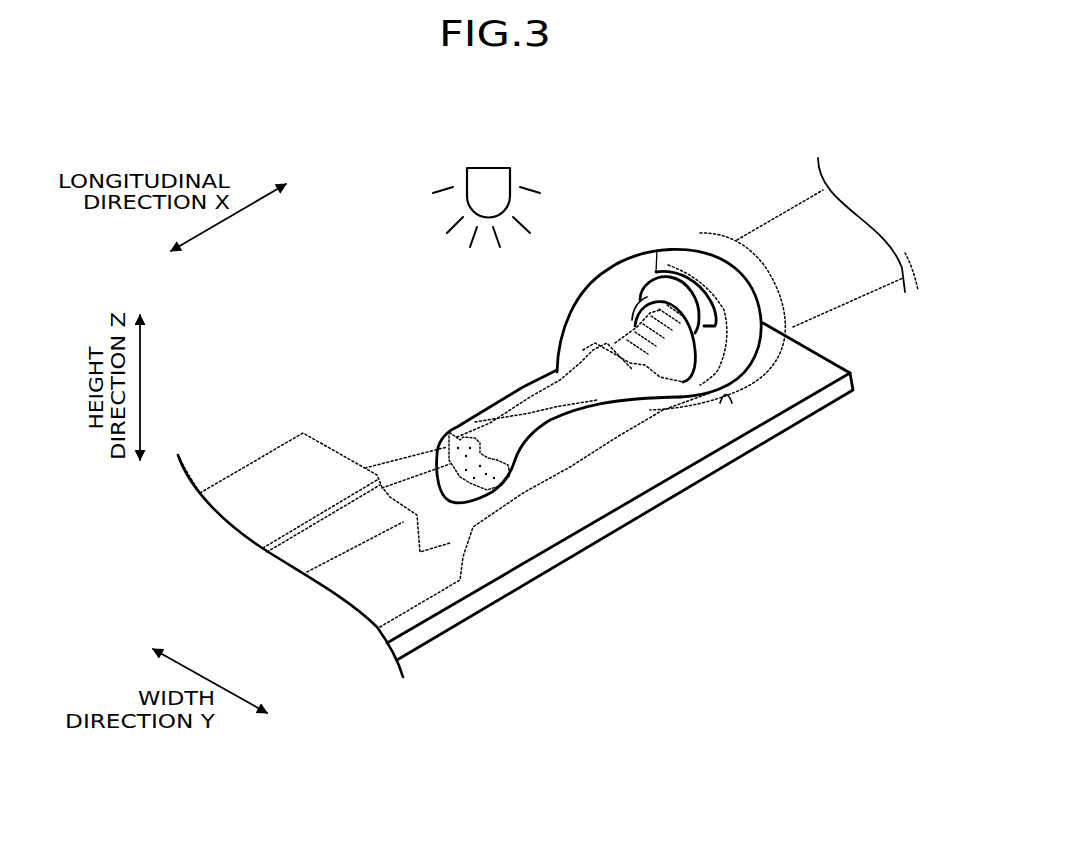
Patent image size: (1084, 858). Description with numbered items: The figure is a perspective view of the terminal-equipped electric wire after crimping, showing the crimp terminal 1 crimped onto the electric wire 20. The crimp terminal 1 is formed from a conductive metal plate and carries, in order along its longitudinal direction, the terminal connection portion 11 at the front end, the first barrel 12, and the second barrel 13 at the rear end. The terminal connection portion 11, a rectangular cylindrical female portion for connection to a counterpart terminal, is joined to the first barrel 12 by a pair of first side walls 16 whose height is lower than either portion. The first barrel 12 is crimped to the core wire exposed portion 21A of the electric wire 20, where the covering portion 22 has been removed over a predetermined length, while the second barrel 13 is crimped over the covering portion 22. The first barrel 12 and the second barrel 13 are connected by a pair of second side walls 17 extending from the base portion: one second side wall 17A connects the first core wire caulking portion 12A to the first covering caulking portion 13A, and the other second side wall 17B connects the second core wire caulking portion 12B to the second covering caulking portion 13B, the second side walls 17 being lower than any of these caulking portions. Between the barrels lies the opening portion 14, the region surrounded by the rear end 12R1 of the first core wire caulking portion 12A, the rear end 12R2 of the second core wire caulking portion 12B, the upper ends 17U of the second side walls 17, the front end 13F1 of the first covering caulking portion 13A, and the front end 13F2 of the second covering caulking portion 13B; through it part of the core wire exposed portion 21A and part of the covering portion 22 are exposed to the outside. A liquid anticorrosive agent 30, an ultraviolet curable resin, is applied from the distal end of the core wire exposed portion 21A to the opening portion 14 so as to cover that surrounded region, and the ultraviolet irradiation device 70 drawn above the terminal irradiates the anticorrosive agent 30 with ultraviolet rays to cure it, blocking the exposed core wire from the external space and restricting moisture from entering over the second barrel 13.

The crimp terminal 1 is at (338, 340).
The terminal connection portion 11 is at (227, 447).
The first barrel 12 is at (570, 366).
The first core wire caulking portion 12A is at (500, 405).
The second core wire caulking portion 12B is at (563, 445).
The rear end of the first core wire caulking portion 12R1 is at (605, 345).
The rear end of the second core wire caulking portion 12R2 is at (653, 367).
The second barrel 13 is at (698, 231).
The first covering caulking portion 13A is at (657, 272).
The second covering caulking portion 13B is at (805, 350).
The front end of the first covering caulking portion 13F1 is at (641, 296).
The front end of the second covering caulking portion 13F2 is at (725, 380).
The opening portion 14 is at (690, 400).
The first side walls 16 is at (407, 457).
The second side walls 17 is at (733, 383).
The one second side wall 17A is at (625, 345).
The other second side wall 17B is at (740, 381).
The upper ends of the second side walls 17U is at (730, 388).
The electric wire 20 is at (779, 199).
The core wire exposed portion 21A is at (610, 345).
The covering portion 22 is at (838, 287).
The anticorrosive agent 30 is at (640, 306).
The ultraviolet irradiation device 70 is at (461, 176).